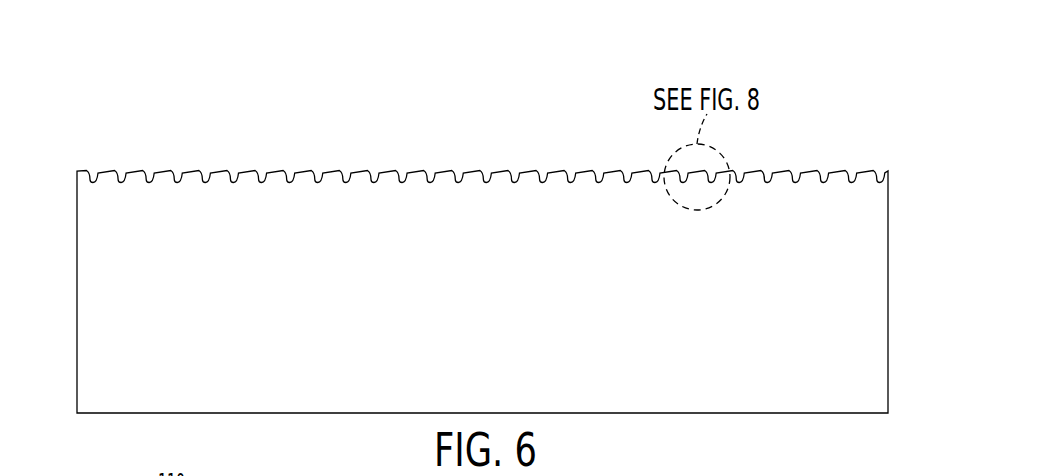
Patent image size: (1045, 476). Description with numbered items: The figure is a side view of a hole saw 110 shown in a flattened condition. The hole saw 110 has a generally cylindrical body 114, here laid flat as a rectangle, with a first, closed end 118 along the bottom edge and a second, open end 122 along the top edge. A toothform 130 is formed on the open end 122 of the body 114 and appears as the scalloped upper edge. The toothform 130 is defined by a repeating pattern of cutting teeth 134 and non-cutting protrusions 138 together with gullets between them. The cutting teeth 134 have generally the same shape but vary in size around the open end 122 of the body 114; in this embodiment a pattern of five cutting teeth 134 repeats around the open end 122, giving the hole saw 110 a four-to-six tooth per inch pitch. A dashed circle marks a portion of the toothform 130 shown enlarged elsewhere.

The cutting tool 110 is at (178, 66).
The body 114 is at (93, 272).
The first, closed end 118 is at (890, 413).
The second, open end 122 is at (888, 172).
The toothform 130 is at (132, 153).
The cutting teeth 134 is at (289, 172).
The non-cutting protrusions 138 is at (275, 172).